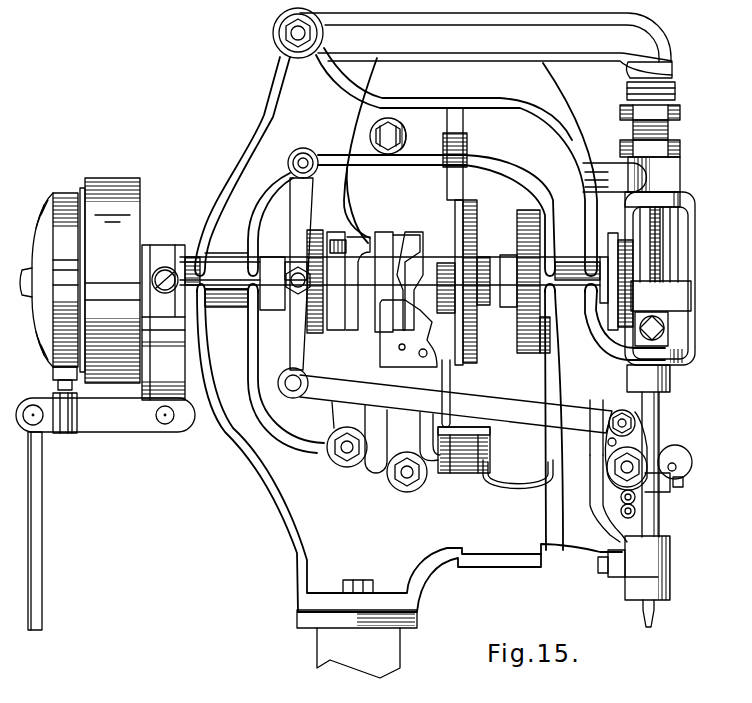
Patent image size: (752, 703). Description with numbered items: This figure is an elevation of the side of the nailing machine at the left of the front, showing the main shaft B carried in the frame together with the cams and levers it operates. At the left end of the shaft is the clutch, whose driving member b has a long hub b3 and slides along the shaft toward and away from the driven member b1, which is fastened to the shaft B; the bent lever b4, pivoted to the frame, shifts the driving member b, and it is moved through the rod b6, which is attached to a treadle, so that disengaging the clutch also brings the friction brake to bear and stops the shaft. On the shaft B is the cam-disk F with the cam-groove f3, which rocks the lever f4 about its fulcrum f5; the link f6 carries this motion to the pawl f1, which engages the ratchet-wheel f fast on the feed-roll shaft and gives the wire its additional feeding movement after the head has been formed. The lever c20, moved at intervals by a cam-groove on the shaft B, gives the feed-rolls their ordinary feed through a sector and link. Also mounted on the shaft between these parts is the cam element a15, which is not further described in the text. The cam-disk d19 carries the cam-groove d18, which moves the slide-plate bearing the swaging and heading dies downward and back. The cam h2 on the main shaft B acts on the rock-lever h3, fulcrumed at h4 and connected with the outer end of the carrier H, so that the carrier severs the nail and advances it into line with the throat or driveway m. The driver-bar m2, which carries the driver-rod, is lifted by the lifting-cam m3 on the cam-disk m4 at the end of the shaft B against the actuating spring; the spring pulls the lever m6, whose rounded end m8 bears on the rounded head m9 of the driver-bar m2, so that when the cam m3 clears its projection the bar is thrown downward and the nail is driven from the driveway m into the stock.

The driving member of clutch b is at (112, 270).
The driven member of clutch b1 is at (82, 188).
The long hub b3 is at (171, 312).
The bent lever b4 is at (105, 413).
The rod b6 is at (42, 497).
The cam-disk F is at (290, 240).
The main shaft B is at (282, 298).
The cam plate a15 is at (406, 238).
The lever c20 is at (393, 336).
The cam h2 is at (457, 282).
The cam-disk d19 is at (522, 330).
The cam-groove d18 is at (547, 335).
The fulcrum f5 is at (306, 148).
The lever f4 is at (308, 212).
The cam-groove f3 is at (302, 298).
The link f6 is at (456, 404).
The fulcrum h4 is at (535, 449).
The rock-lever h3 is at (447, 383).
The lever m6 is at (486, 44).
The rounded end m8 is at (675, 71).
The rounded head m9 is at (676, 91).
The lifting-cam m3 is at (630, 292).
The cam-disk m4 is at (623, 208).
The driver-bar m2 is at (655, 414).
The pawl f1 is at (643, 437).
The ratchet-wheel f is at (608, 493).
The carrier H is at (637, 570).
The throat or driveway m is at (657, 607).